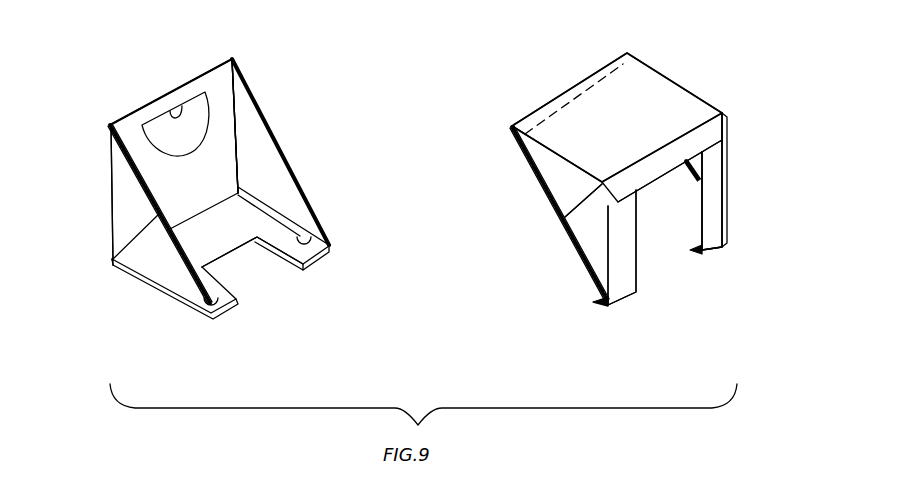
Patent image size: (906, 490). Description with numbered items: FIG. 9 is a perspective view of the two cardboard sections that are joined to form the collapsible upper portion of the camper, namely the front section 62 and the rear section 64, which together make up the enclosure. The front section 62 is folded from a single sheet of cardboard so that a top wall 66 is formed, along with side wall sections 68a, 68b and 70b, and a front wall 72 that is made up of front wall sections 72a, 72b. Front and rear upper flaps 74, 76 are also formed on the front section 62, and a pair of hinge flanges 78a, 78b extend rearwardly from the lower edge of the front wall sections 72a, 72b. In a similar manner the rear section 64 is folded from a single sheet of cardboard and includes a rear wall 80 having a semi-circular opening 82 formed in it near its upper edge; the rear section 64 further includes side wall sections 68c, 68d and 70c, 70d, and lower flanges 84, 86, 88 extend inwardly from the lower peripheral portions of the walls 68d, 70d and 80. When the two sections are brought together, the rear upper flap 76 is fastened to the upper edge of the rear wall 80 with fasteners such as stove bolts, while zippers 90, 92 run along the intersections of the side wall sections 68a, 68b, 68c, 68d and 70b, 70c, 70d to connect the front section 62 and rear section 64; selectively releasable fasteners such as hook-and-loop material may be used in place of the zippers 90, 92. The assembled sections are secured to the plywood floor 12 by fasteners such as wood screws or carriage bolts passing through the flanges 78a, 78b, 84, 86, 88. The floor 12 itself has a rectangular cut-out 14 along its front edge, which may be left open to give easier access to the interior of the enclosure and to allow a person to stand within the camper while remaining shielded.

The floor 12 is at (112, 262).
The cut-out section 14 is at (268, 286).
The front section 62 is at (524, 250).
The rear section 64 is at (316, 110).
The top wall 66 is at (670, 97).
The side wall section 68a is at (567, 188).
The side wall section 68b is at (590, 242).
The side wall section 68c is at (125, 183).
The side wall section 68d is at (137, 268).
The side wall section 70b is at (687, 170).
The side wall section 70c is at (243, 120).
The side wall section 70d is at (282, 188).
The front wall 72 is at (755, 158).
The front wall section 72a is at (623, 255).
The front wall section 72b is at (722, 208).
The front upper flap 74 is at (712, 128).
The rear upper flap 76 is at (510, 130).
The hinge flange 78a is at (590, 302).
The hinge flange 78b is at (697, 252).
The rear wall 80 is at (218, 102).
The semi-circular opening 82 is at (181, 113).
The lower flange 84 is at (195, 303).
The lower flange 86 is at (197, 217).
The lower flange 88 is at (300, 228).
The zipper 90 is at (150, 193).
The zipper 92 is at (238, 187).